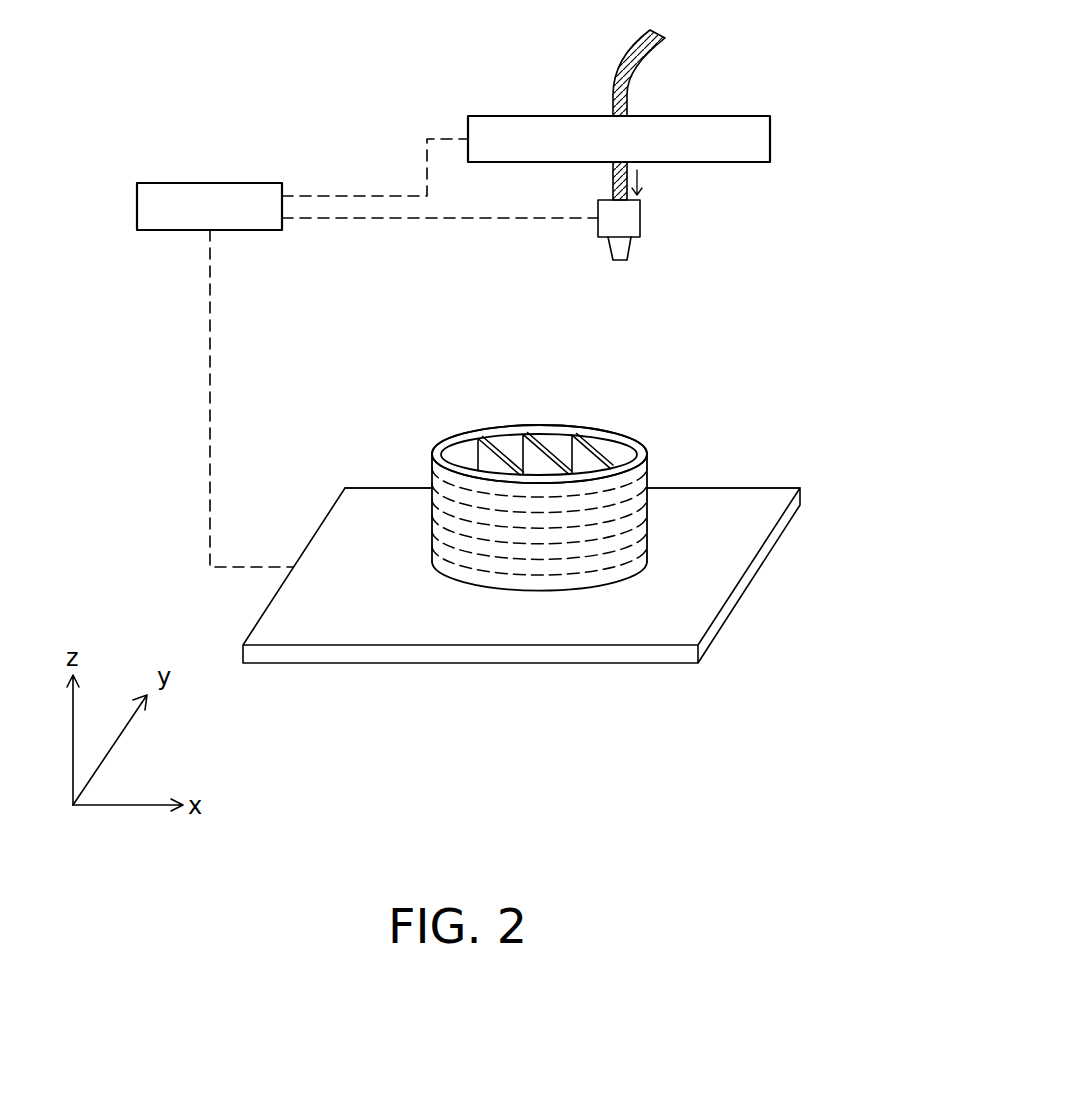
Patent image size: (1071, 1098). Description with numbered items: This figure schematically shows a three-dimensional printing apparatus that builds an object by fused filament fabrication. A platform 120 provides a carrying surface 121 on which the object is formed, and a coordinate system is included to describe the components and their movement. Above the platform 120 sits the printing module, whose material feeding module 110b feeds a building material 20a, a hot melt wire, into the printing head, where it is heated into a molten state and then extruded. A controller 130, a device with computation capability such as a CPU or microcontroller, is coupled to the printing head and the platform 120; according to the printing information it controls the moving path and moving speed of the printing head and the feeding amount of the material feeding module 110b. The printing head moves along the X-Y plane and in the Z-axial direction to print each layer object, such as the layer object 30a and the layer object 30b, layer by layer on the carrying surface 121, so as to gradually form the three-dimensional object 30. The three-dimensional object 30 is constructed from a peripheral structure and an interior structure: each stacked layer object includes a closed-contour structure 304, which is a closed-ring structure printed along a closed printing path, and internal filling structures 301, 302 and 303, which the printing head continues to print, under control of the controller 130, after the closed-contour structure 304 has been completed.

The building material 20a is at (620, 76).
The material feeding module 110b is at (732, 115).
The controller 130 is at (245, 183).
The 3-D object 30 is at (653, 414).
The closed-contour structure 304 is at (432, 453).
The internal filling structure 301 is at (485, 460).
The internal filling structure 302 is at (530, 458).
The internal filling structure 303 is at (585, 460).
The carrying surface 121 is at (751, 496).
The layer object 30b is at (647, 468).
The layer object 30a is at (648, 558).
The platform 120 is at (572, 655).